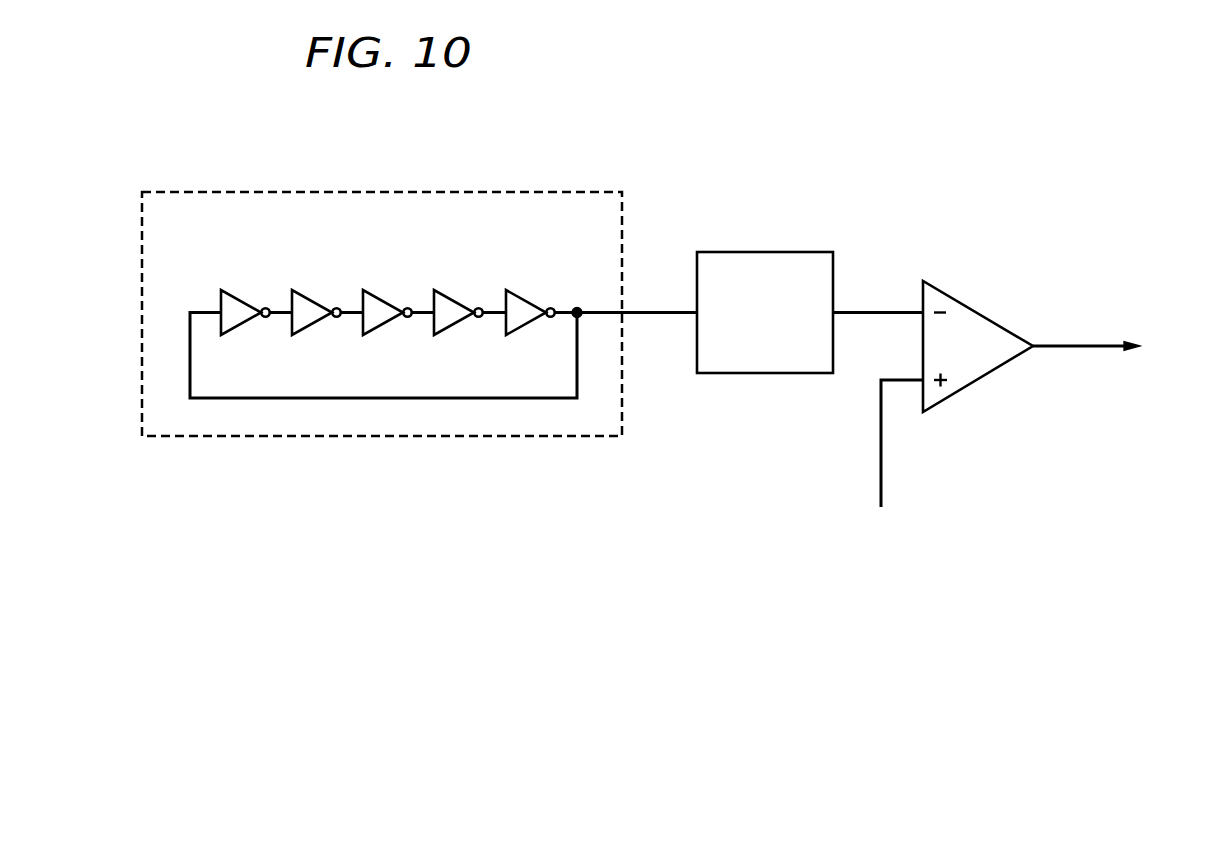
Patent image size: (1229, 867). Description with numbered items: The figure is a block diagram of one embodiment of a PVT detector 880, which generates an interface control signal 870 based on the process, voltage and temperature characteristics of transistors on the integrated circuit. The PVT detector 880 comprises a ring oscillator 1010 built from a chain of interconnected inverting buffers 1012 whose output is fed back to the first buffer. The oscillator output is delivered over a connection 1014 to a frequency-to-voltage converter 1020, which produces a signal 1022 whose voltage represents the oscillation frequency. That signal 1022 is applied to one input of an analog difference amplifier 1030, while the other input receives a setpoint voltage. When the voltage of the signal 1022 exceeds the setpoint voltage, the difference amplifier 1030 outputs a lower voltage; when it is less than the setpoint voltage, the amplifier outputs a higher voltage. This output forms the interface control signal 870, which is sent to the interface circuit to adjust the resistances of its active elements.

The PVT detector 880 is at (401, 118).
The ring oscillator 1010 is at (535, 192).
The inverting buffers 1012 is at (548, 272).
The connection 1014 is at (662, 312).
The frequency-to-voltage converter 1020 is at (740, 252).
The signal 1022 is at (885, 312).
The analog difference amplifier 1030 is at (982, 310).
The interface control signal 870 is at (1113, 346).